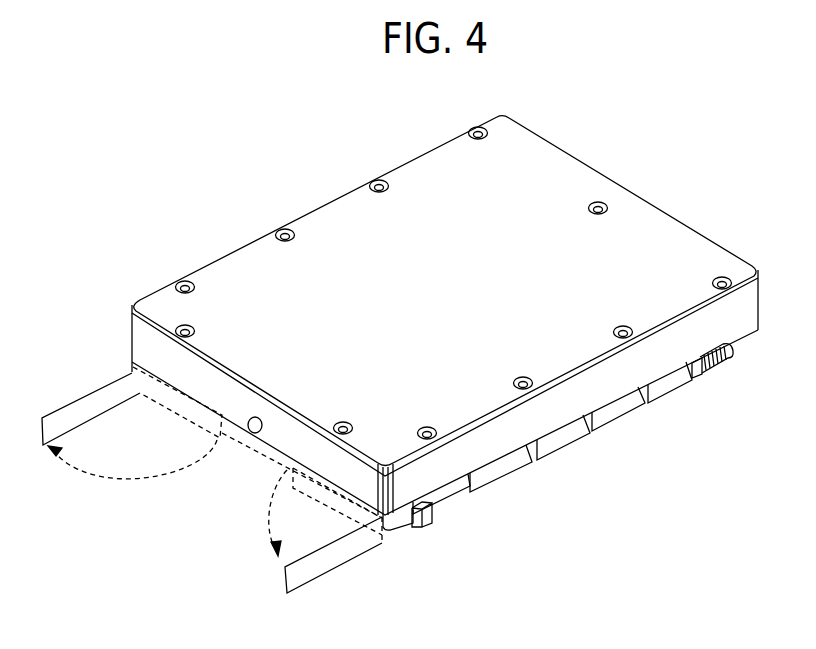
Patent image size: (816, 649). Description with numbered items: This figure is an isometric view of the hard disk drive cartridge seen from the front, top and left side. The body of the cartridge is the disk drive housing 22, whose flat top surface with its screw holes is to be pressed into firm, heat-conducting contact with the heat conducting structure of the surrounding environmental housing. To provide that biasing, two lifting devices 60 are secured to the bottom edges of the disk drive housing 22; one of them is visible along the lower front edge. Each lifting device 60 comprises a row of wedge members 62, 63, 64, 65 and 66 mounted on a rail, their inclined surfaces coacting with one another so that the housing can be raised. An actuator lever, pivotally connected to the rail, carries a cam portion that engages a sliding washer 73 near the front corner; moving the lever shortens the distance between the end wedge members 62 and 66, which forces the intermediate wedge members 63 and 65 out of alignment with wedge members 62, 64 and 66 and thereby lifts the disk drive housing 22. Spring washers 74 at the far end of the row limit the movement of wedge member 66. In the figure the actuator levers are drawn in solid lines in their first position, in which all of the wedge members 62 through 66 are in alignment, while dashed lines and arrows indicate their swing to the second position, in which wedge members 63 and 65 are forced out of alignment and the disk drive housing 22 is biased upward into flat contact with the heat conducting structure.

The disk drive housing 22 is at (328, 194).
The lifting device 60 is at (550, 467).
The wedge member 62 is at (450, 502).
The wedge member 63 is at (503, 475).
The wedge member 64 is at (558, 443).
The wedge member 65 is at (635, 407).
The wedge member 66 is at (678, 388).
The sliding washer 73 is at (428, 527).
The spring washers 74 is at (712, 370).